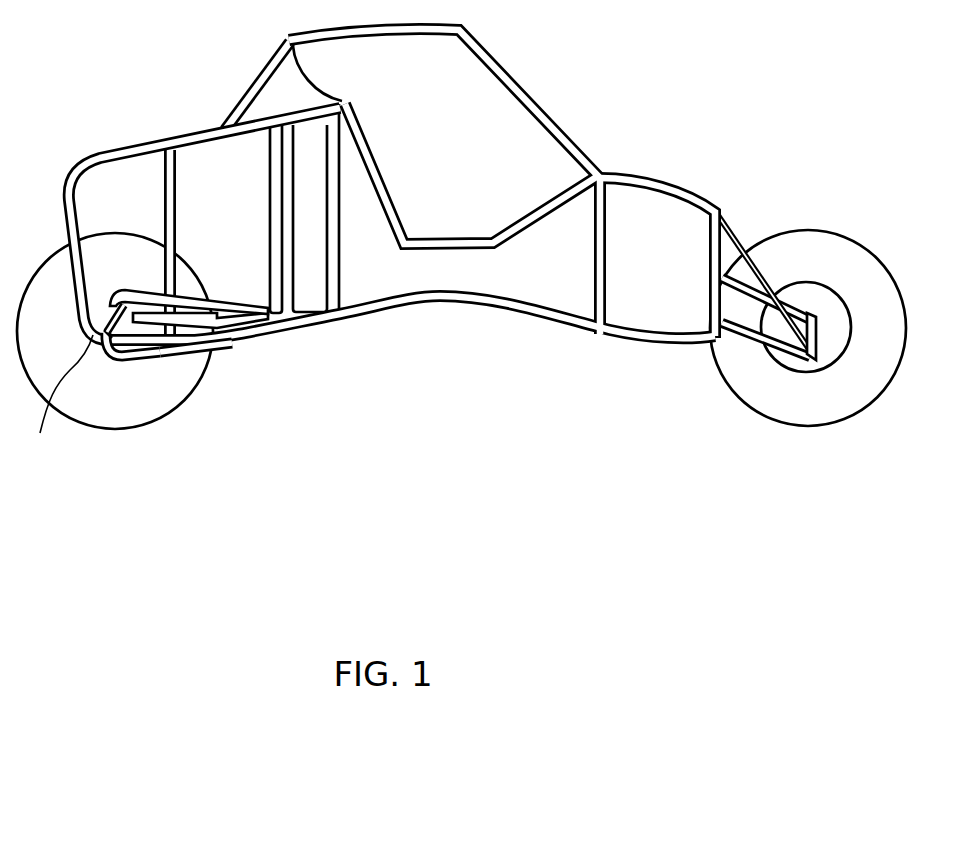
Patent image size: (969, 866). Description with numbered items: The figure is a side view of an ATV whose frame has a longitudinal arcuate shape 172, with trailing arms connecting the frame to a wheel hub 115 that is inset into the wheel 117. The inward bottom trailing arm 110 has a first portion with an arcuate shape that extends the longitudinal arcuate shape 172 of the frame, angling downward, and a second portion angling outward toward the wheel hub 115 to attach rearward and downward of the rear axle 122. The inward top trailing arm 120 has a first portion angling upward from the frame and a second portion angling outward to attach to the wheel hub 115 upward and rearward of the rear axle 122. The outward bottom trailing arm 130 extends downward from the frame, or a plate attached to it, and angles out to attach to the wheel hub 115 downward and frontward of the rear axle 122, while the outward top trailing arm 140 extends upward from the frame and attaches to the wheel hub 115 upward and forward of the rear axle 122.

The inward bottom trailing arm 110 is at (207, 352).
The wheel hub 115 is at (69, 396).
The wheel 117 is at (110, 427).
The inward top trailing arm 120 is at (137, 282).
The rear axle 122 is at (124, 310).
The outward bottom trailing arm 130 is at (161, 347).
The outward top trailing arm 140 is at (196, 297).
The longitudinal arcuate shape of the frame 172 is at (447, 310).